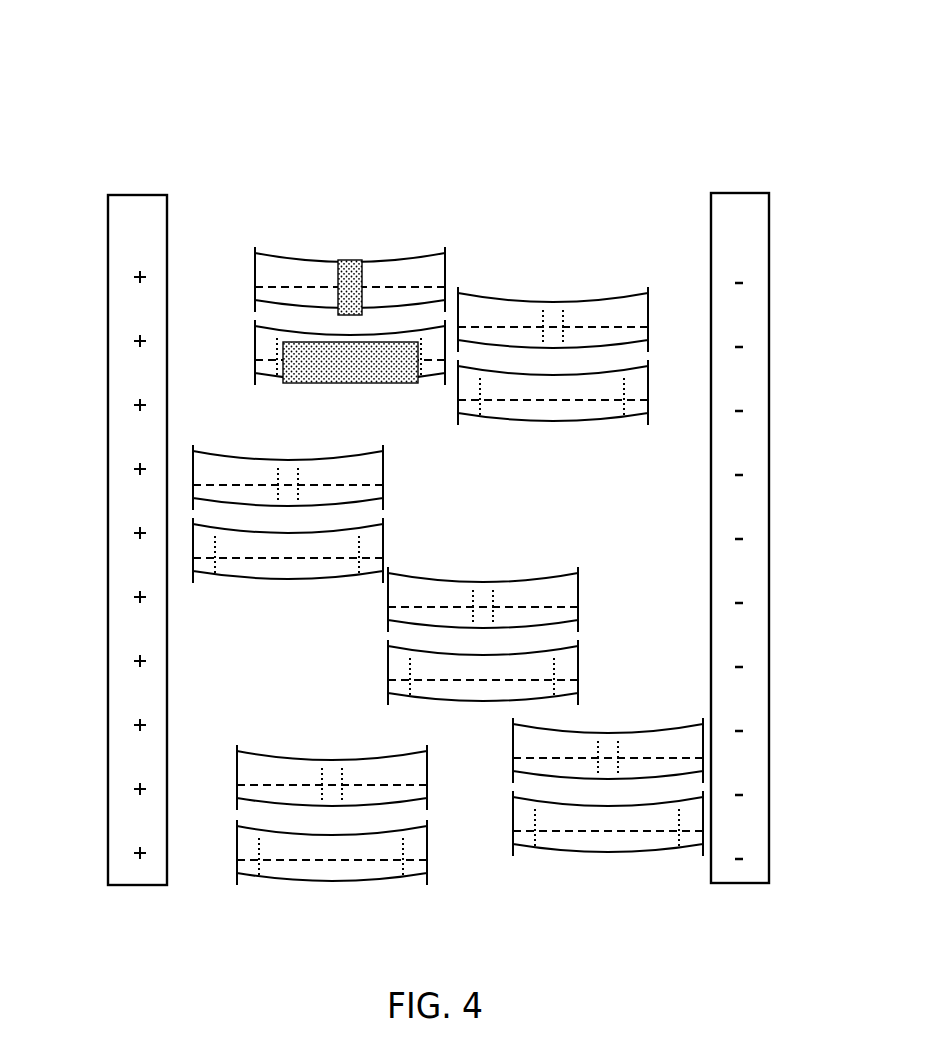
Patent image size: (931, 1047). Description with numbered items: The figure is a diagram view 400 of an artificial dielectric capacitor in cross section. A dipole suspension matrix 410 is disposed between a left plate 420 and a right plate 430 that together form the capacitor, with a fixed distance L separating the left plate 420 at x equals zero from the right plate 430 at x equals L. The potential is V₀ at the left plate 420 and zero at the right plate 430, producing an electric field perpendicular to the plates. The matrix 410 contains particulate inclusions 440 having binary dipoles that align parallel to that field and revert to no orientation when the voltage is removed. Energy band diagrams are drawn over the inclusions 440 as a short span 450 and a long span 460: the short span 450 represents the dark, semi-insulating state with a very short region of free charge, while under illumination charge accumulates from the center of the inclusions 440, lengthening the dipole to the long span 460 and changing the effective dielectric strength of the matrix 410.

The diagram view 400 is at (250, 67).
The dipole suspension matrix 410 is at (256, 655).
The left plate 420 is at (108, 327).
The right plate 430 is at (769, 263).
The inclusions 440 is at (555, 295).
The short span 450 is at (343, 268).
The long span 460 is at (407, 386).